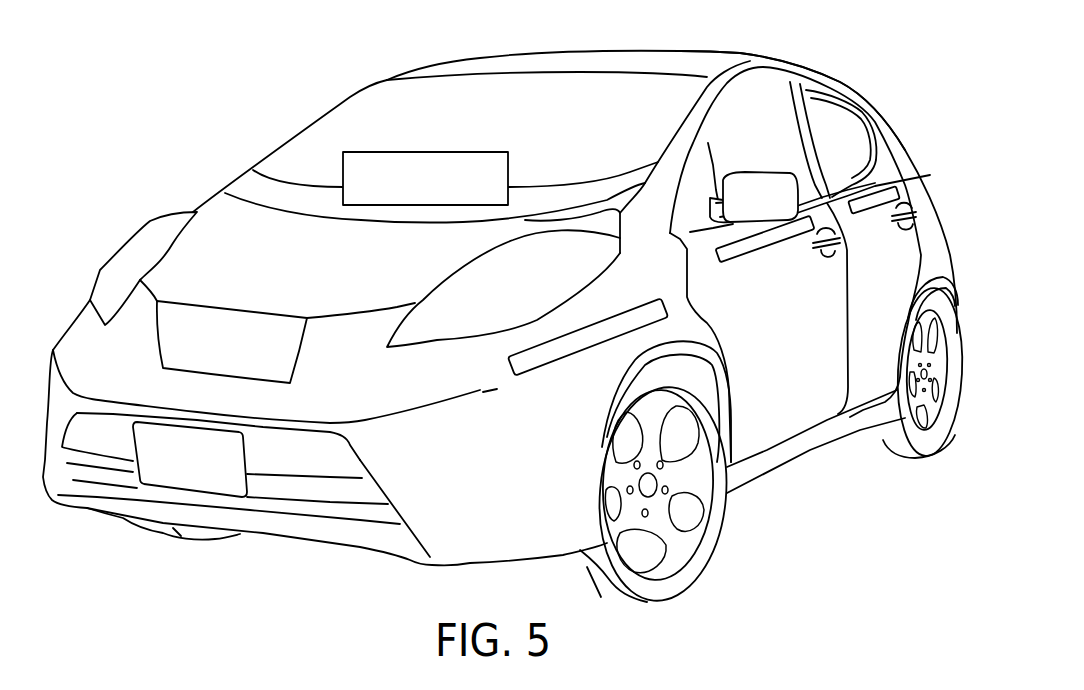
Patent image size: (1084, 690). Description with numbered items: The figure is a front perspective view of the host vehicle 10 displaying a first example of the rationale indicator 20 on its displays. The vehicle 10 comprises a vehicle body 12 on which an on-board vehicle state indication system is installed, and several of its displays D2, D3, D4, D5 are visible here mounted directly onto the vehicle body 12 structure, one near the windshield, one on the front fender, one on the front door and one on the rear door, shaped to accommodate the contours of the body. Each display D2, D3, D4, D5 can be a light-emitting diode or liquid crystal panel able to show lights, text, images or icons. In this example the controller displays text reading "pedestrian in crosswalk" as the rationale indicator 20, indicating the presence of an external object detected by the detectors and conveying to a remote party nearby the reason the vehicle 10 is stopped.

The host vehicle 10 is at (767, 37).
The vehicle body 12 is at (843, 80).
The rationale indicator 20 is at (644, 263).
The display D2 is at (867, 212).
The display D3 is at (743, 258).
The display D4 is at (607, 312).
The display D5 is at (455, 153).